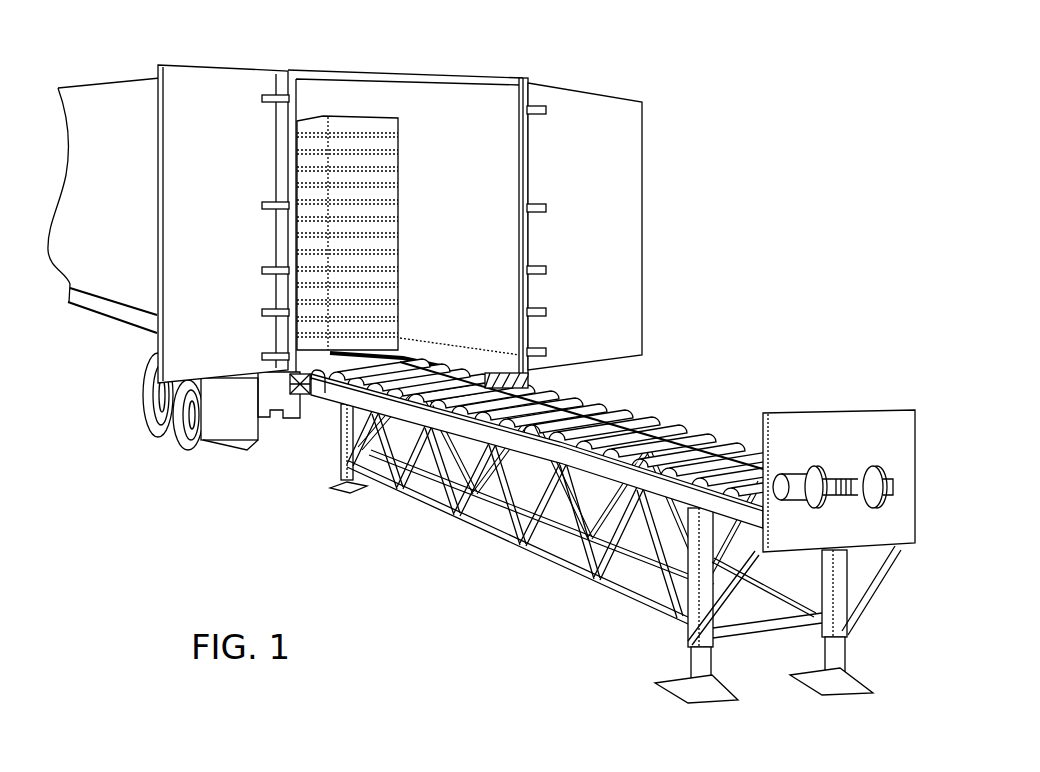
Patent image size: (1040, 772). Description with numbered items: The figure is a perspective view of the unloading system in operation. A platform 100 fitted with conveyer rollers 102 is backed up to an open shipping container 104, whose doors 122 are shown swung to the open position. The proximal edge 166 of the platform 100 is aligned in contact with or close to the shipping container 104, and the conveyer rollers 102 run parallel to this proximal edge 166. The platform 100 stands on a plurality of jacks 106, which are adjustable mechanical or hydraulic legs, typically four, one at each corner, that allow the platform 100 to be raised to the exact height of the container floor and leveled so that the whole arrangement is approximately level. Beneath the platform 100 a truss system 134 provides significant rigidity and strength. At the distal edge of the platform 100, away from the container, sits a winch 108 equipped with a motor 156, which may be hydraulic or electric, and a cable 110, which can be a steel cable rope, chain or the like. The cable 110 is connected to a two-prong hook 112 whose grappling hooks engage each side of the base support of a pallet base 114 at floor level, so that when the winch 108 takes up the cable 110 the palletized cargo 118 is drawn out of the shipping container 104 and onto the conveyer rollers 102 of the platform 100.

The platform 100 is at (621, 524).
The conveyer rollers 102 is at (621, 537).
The shipping container 104 is at (103, 108).
The jacks 106 is at (350, 492).
The winch 108 is at (887, 493).
The cable 110 is at (700, 450).
The two-prong hook 112 is at (393, 372).
The pallet base 114 is at (293, 392).
The palletized cargo 118 is at (367, 120).
The doors 122 is at (235, 98).
The truss system 134 is at (530, 549).
The motor 156 is at (787, 473).
The proximal edge 166 is at (311, 377).